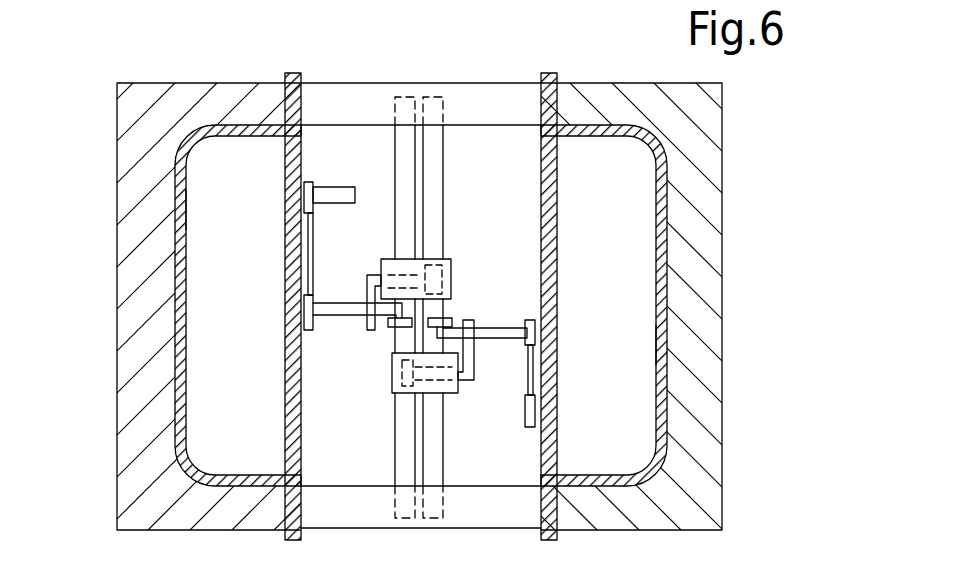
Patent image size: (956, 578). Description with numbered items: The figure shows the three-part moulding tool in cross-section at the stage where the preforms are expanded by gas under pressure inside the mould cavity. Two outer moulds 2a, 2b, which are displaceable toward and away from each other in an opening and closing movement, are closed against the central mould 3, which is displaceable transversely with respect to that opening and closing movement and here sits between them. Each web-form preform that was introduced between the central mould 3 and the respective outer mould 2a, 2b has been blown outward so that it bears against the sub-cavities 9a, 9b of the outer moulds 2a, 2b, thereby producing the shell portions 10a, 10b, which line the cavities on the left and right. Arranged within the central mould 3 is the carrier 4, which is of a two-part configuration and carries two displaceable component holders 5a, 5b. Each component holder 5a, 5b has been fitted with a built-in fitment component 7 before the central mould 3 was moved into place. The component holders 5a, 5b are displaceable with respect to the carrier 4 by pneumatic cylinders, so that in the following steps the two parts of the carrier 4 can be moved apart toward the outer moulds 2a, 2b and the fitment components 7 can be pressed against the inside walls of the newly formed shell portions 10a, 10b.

The outer mould 2a is at (188, 93).
The outer mould 2b is at (640, 100).
The central mould 3 is at (463, 92).
The carrier 4 is at (438, 212).
The component holder 5a is at (372, 331).
The component holder 5b is at (463, 317).
The fitment component 7 is at (306, 203).
The sub-cavity 9a is at (173, 297).
The sub-cavity 9b is at (662, 278).
The shell portion 10a is at (186, 206).
The shell portion 10b is at (657, 343).